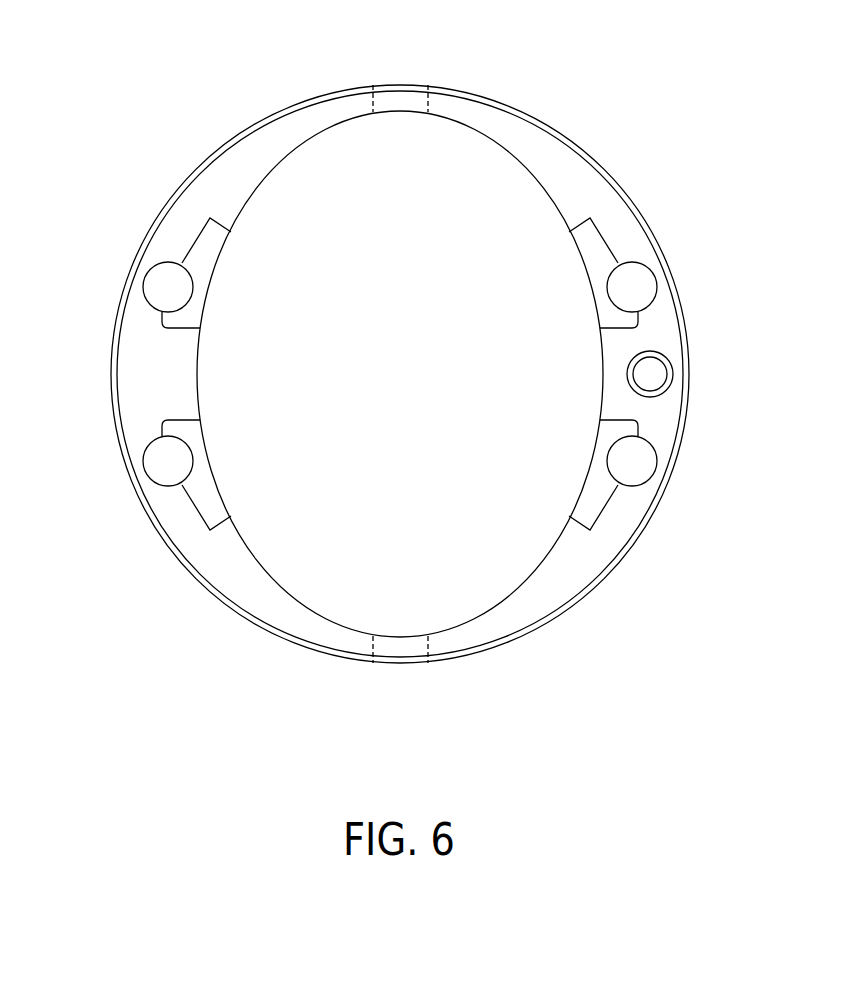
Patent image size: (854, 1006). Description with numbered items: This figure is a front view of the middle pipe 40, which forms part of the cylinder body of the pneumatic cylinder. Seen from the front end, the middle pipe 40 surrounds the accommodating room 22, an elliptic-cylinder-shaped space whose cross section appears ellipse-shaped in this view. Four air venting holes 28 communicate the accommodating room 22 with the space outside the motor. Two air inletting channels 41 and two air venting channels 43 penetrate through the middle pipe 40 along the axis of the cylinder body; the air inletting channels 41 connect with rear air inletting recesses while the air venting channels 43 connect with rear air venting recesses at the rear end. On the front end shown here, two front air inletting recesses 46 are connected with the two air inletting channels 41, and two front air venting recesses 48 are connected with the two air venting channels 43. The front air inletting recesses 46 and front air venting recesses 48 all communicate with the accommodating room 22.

The middle pipe 40 is at (294, 100).
The accommodating room 22 is at (462, 192).
The air venting holes 28 is at (432, 100).
The air inletting channels 41 is at (640, 283).
The air venting channels 43 is at (172, 280).
The front air inletting recesses 46 is at (600, 238).
The front air venting recesses 48 is at (202, 248).